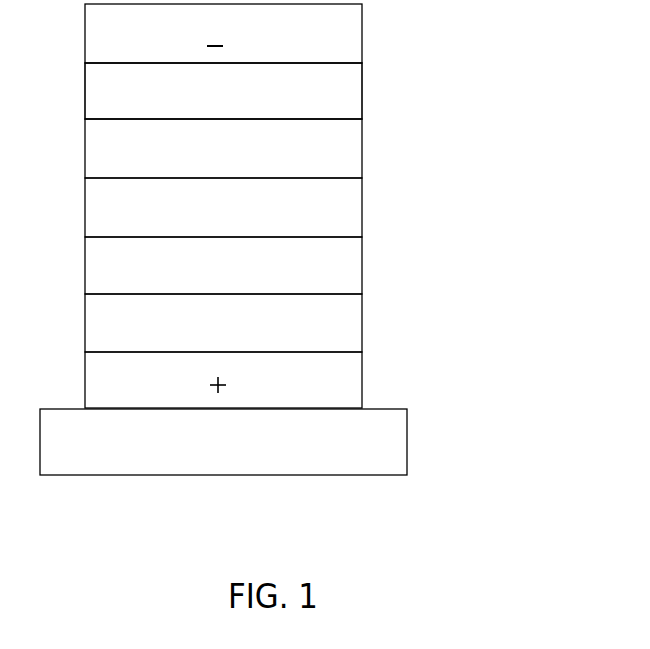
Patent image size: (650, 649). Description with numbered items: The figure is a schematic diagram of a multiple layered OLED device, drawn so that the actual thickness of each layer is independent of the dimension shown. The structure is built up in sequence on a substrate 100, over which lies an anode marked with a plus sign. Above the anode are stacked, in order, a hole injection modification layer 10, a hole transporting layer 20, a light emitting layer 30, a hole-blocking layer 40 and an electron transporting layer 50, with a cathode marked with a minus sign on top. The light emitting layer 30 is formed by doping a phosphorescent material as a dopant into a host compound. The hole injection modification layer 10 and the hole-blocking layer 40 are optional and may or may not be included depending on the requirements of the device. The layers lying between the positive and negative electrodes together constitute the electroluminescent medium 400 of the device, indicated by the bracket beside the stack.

The hole injection modification layer 10 is at (223, 323).
The hole transporting layer 20 is at (223, 265).
The light emitting layer 30 is at (223, 207).
The hole-blocking layer 40 is at (223, 148).
The electron transporting layer 50 is at (223, 91).
The substrate 100 is at (387, 453).
The electroluminescent medium 400 is at (291, 207).